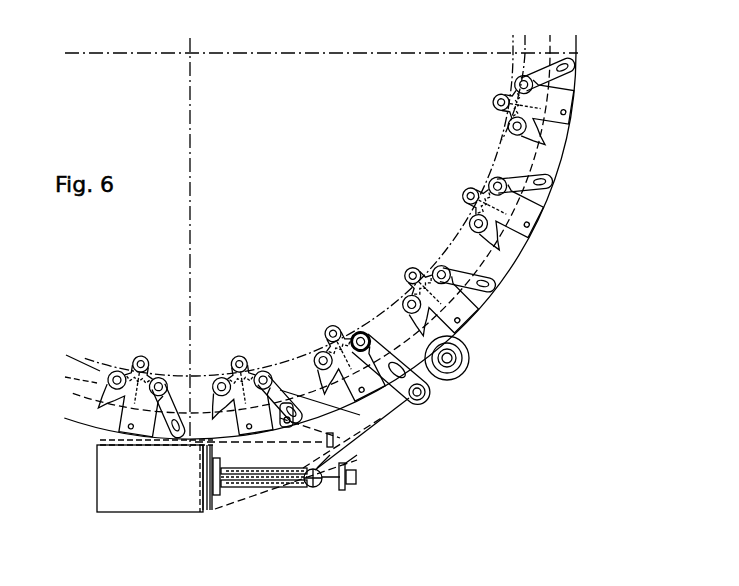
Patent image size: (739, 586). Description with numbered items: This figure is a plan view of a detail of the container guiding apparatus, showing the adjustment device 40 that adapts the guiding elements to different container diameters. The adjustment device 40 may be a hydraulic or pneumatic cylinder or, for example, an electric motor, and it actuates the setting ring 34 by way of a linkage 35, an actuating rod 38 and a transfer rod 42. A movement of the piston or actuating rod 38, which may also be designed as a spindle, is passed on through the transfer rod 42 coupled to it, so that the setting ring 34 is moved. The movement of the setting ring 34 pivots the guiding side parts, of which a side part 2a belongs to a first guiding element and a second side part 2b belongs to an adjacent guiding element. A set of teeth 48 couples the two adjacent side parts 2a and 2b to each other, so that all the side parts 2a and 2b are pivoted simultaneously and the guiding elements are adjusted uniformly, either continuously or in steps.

The side part 2a is at (497, 243).
The side part 2b is at (520, 190).
The setting ring 34 is at (497, 273).
The linkage 35 is at (418, 366).
The actuating rod 38 is at (253, 473).
The adjustment device 40 is at (143, 470).
The transfer rod 42 is at (370, 426).
The set of teeth 48 is at (502, 205).